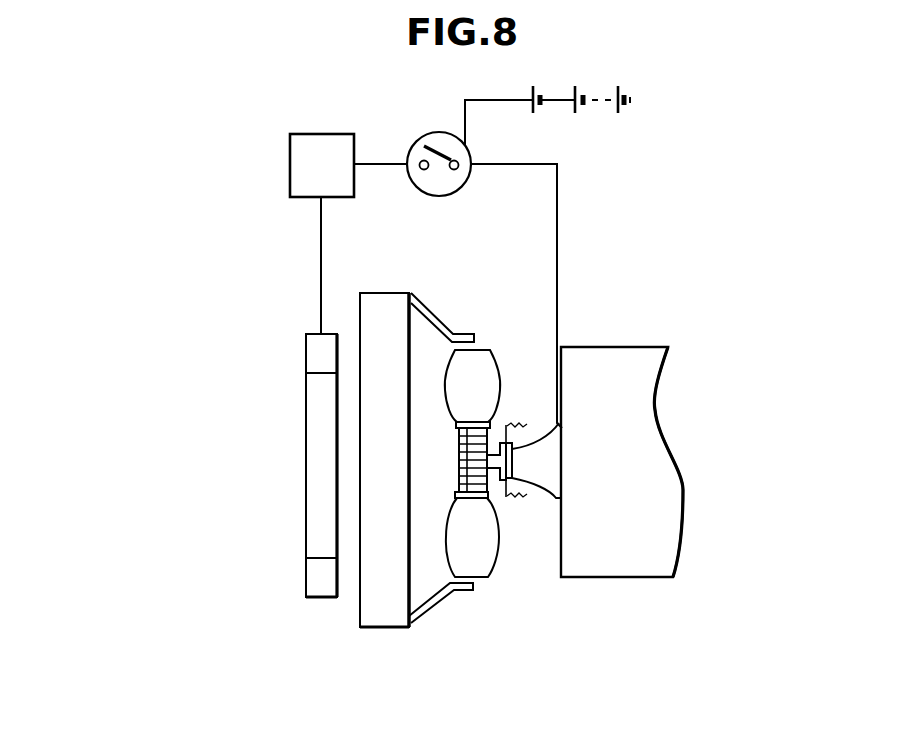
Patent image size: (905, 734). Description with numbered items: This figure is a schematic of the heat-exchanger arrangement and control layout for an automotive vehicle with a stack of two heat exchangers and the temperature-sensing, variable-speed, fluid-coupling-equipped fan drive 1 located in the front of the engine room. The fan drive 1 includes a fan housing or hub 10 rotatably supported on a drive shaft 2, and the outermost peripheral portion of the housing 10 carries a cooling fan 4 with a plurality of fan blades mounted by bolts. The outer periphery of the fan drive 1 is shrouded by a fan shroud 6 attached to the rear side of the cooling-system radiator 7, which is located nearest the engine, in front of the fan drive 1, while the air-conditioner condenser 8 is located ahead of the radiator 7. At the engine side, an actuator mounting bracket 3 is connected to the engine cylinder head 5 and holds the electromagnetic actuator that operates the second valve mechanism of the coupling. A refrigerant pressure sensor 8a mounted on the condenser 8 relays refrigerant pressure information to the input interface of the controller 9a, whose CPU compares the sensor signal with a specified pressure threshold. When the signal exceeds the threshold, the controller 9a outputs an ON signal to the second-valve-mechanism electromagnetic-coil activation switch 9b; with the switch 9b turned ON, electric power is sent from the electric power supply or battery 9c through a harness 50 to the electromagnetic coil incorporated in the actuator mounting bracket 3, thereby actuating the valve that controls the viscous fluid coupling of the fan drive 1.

The fan drive 1 is at (505, 570).
The drive shaft 2 is at (497, 440).
The actuator mounting bracket 3 is at (545, 455).
The cooling fan 4 is at (453, 528).
The engine cylinder head 5 is at (637, 412).
The fan shroud 6 is at (437, 607).
The cooling-system radiator 7 is at (385, 600).
The air-conditioner condenser 8 is at (322, 490).
The refrigerant pressure sensor 8a is at (315, 360).
The controller 9a is at (319, 150).
The second-valve-mechanism electromagnetic-coil activation switch 9b is at (448, 178).
The electric power supply (battery) 9c is at (583, 117).
The fan housing or hub 10 is at (475, 467).
The harness 50 is at (558, 243).